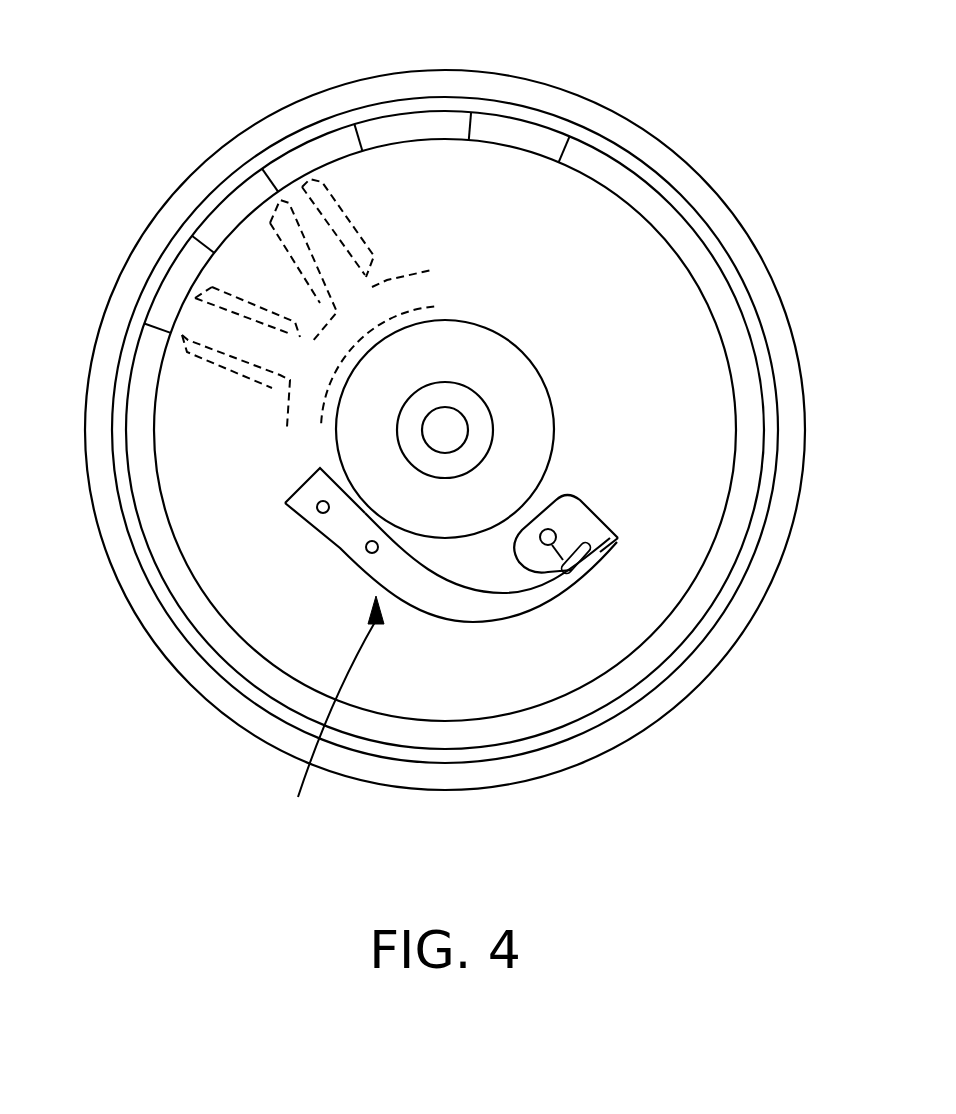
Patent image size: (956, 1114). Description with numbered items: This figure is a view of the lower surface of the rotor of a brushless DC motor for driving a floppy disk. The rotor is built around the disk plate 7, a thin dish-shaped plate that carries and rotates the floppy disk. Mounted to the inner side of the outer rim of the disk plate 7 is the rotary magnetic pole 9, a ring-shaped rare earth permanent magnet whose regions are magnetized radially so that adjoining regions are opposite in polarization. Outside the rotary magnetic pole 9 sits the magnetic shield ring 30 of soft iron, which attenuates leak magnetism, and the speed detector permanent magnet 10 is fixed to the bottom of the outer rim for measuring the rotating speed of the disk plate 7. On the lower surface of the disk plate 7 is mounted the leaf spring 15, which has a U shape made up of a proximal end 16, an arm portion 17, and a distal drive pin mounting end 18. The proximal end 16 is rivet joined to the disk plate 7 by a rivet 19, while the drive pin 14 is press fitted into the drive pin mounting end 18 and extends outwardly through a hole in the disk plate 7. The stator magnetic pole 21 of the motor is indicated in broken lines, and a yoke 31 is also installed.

The disk plate 7 is at (197, 419).
The rotary magnetic pole 9 is at (516, 138).
The speed detector permanent magnet 10 is at (797, 437).
The drive pin 14 is at (578, 570).
The leaf spring 15 is at (332, 715).
The proximal end 16 is at (292, 510).
The arm portion 17 is at (464, 617).
The distal drive pin mounting end 18 is at (618, 540).
The rivet 19 is at (372, 556).
The stator magnetic pole 21 is at (290, 190).
The magnetic shield ring 30 is at (740, 292).
The yoke 31 is at (398, 272).